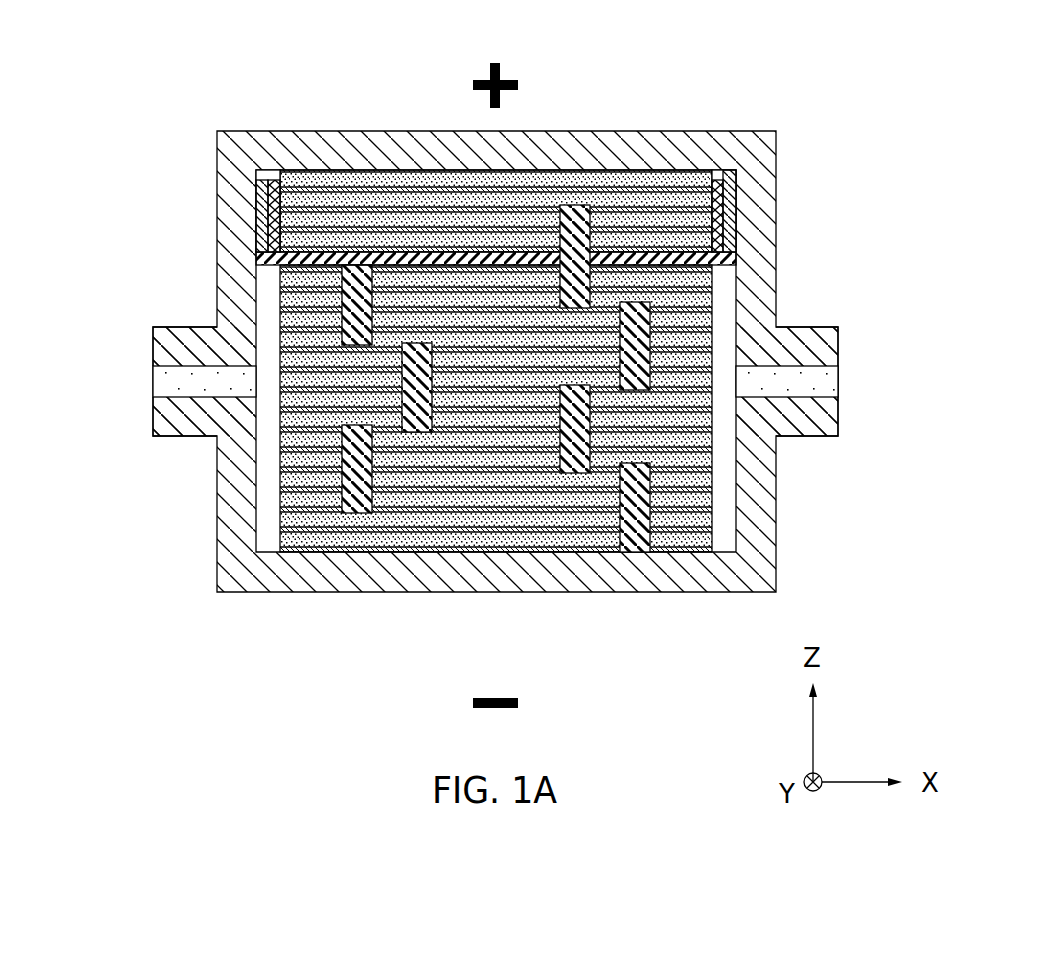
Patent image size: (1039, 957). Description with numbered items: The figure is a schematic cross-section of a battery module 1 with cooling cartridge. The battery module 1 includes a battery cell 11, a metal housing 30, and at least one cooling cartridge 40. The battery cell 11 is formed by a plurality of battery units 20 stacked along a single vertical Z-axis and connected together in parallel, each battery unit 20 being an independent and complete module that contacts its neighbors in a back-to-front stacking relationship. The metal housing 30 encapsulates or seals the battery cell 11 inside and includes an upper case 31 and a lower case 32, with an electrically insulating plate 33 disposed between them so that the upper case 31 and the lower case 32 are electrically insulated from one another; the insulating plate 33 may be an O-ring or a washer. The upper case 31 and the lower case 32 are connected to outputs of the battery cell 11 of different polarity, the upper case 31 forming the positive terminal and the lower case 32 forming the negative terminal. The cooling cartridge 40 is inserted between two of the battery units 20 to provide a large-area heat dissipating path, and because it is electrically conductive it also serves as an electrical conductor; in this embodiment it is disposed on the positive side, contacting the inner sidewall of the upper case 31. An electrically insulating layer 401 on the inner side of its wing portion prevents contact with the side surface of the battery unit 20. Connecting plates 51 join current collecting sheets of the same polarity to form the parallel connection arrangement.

The battery module 1 is at (198, 66).
The battery cell 11 is at (344, 170).
The battery unit 20 is at (282, 484).
The metal housing 30 is at (138, 372).
The upper case 31 is at (153, 350).
The lower case 32 is at (168, 396).
The electrically insulating plate 33 is at (838, 378).
The cooling cartridge 40 is at (553, 177).
The electrically insulating layer 401 is at (712, 175).
The connecting plate 51 is at (634, 556).